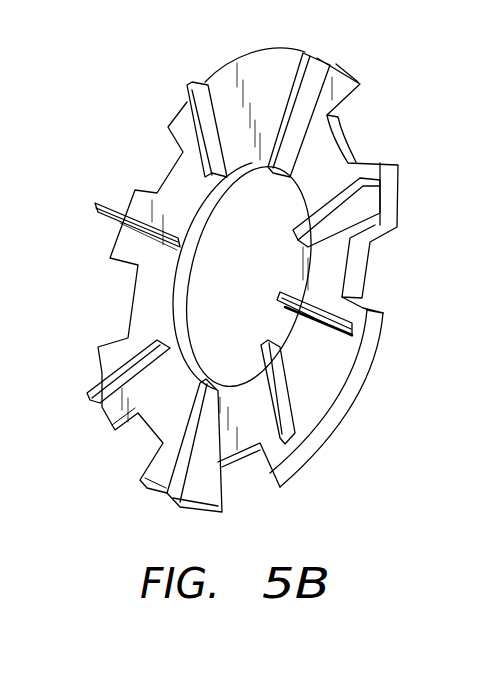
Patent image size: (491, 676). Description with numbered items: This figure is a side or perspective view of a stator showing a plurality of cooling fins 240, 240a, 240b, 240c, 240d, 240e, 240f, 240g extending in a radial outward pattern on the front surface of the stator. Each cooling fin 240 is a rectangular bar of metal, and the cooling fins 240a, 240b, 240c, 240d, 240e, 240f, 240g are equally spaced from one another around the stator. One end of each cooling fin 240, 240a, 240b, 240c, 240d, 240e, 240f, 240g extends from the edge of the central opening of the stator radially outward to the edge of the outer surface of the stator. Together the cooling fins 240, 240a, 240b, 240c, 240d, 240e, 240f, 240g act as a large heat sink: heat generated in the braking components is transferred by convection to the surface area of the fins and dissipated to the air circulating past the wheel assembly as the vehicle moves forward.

The cooling fin 240 is at (202, 82).
The cooling fin 240a is at (313, 54).
The cooling fin 240b is at (372, 181).
The cooling fin 240c is at (347, 338).
The cooling fin 240d is at (288, 429).
The cooling fin 240e is at (222, 510).
The cooling fin 240f is at (102, 407).
The cooling fin 240g is at (112, 203).